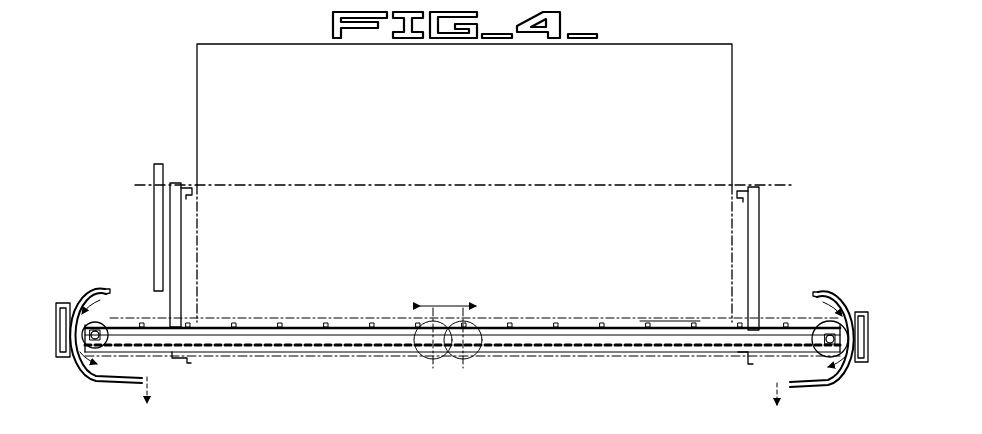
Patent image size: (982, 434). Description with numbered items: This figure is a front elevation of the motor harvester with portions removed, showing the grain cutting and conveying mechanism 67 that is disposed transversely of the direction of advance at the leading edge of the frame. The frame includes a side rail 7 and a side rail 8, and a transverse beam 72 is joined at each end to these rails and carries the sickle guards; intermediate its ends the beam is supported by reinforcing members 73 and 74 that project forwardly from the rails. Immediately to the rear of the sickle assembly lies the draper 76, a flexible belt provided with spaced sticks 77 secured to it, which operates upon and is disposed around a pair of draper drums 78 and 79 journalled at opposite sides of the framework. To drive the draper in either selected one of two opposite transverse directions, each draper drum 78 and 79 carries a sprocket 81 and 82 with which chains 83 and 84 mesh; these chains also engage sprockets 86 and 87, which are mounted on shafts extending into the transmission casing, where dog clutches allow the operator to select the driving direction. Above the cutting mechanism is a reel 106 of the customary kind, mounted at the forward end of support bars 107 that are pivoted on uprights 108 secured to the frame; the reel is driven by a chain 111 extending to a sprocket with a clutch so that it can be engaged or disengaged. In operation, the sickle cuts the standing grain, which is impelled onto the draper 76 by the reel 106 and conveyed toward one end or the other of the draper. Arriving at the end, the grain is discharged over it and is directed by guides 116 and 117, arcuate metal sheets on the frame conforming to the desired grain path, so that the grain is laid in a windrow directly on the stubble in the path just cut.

The reel 106 is at (735, 117).
The support bars 107 is at (193, 198).
The uprights 108 is at (181, 236).
The chain 111 is at (158, 265).
The side rail 7 is at (63, 357).
The side rail 8 is at (866, 362).
The draper drum 78 is at (108, 325).
The sprocket 81 is at (103, 348).
The guide 116 is at (101, 380).
The guide 117 is at (823, 380).
The reinforcing member 73 is at (187, 358).
The reinforcing member 74 is at (740, 361).
The chain 83 is at (252, 320).
The draper 76 is at (302, 326).
The transverse beam 72 is at (297, 337).
The grain cutting and conveying mechanism 67 is at (385, 350).
The sprocket 86 is at (430, 362).
The sprocket 87 is at (470, 362).
The sticks 77 is at (603, 324).
The chain 84 is at (673, 322).
The sprocket 82 is at (823, 325).
The draper drum 79 is at (820, 346).